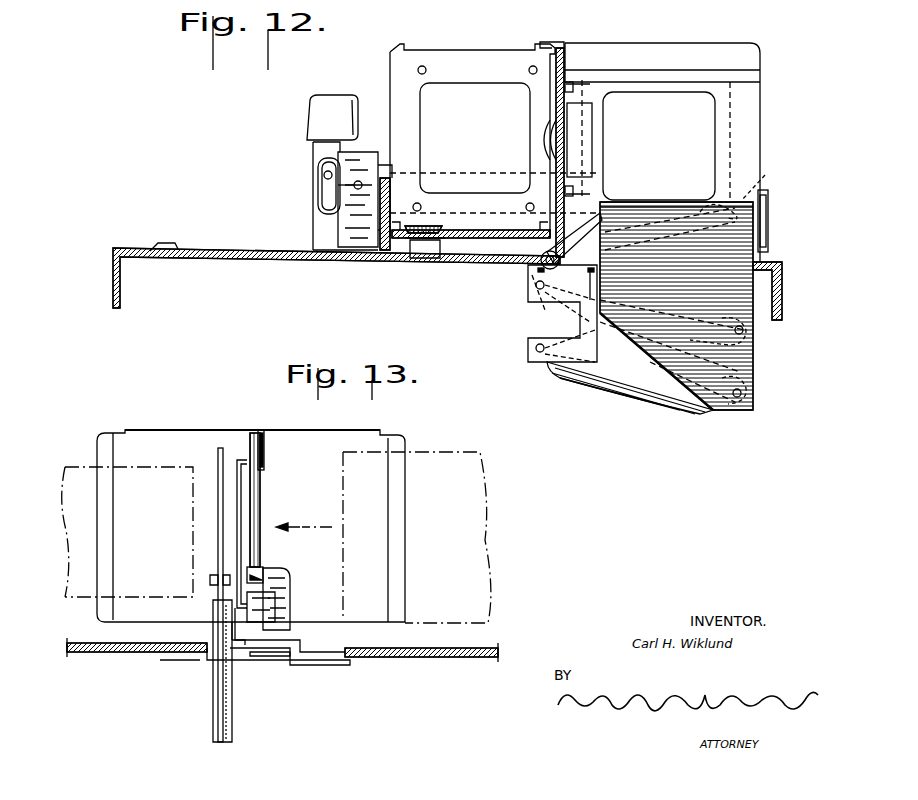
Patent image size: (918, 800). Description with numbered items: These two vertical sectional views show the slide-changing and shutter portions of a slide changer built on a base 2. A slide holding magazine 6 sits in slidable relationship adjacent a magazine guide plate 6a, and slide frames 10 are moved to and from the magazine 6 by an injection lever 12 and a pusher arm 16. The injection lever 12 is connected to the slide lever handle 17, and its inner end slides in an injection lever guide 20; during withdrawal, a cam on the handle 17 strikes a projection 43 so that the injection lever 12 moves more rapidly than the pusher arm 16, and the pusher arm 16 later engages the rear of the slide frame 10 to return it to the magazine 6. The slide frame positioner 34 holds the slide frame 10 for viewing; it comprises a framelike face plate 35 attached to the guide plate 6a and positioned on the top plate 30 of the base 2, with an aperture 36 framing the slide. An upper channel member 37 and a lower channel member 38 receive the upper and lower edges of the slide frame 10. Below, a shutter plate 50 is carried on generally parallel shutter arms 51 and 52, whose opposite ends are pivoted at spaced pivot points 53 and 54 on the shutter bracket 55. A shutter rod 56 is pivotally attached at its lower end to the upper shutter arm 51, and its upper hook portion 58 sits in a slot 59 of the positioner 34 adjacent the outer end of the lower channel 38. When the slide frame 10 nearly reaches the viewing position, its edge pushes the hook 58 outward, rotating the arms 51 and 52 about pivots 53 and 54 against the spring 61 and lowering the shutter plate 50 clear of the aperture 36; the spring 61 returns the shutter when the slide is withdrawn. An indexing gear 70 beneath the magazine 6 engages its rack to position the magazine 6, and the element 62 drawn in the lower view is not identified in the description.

In FIG. 13, the base 2 is at (440, 665).
In FIG. 12, the slide holding magazine 6 is at (463, 62).
In FIG. 12, the magazine guide plate 6a is at (557, 45).
In FIG. 12, the slide frame 10 is at (728, 143).
In FIG. 13, the slide frame 10 is at (253, 518).
In FIG. 12, the injection lever 12 is at (450, 178).
In FIG. 12, the pusher arm 16 is at (769, 217).
In FIG. 13, the pusher arm 16 is at (291, 584).
In FIG. 12, the slide lever handle 17 is at (296, 161).
In FIG. 12, the injection lever guide 20 is at (340, 198).
In FIG. 13, the top plate 30 is at (195, 643).
In FIG. 12, the slide frame positioner 34 is at (728, 38).
In FIG. 13, the slide frame positioner 34 is at (270, 428).
In FIG. 12, the face plate 35 is at (752, 95).
In FIG. 13, the face plate 35 is at (240, 472).
In FIG. 12, the aperture 36 is at (669, 95).
In FIG. 13, the upper channel member 37 is at (266, 463).
In FIG. 13, the lower channel member 38 is at (277, 575).
In FIG. 12, the projection 43 is at (175, 243).
In FIG. 12, the shutter plate 50 is at (688, 277).
In FIG. 13, the shutter plate 50 is at (218, 514).
In FIG. 12, the upper shutter arm 51 is at (540, 257).
In FIG. 12, the lower shutter arm 52 is at (624, 380).
In FIG. 12, the pivot point 53 is at (537, 285).
In FIG. 12, the pivot point 54 is at (536, 348).
In FIG. 12, the shutter bracket 55 is at (580, 320).
In FIG. 12, the shutter rod 56 is at (685, 235).
In FIG. 13, the shutter rod 56 is at (233, 640).
In FIG. 12, the hook portion 58 is at (764, 179).
In FIG. 13, the hook portion 58 is at (272, 606).
In FIG. 12, the slot 59 is at (712, 200).
In FIG. 12, the spring 61 is at (700, 325).
In FIG. 13, the spring 61 is at (229, 680).
In FIG. 13, the cover plate 62 is at (339, 431).
In FIG. 12, the indexing gear 70 is at (447, 228).